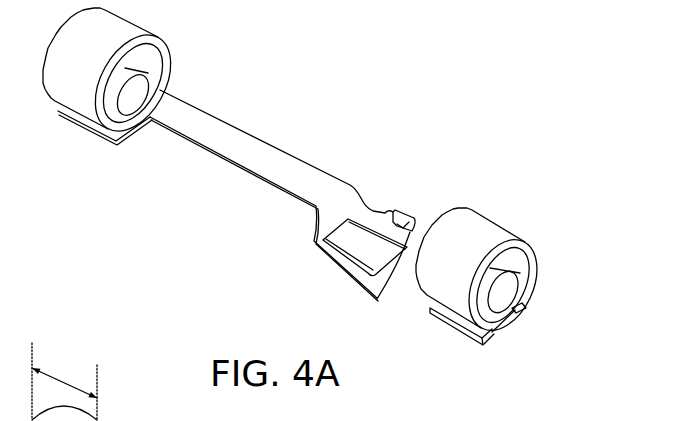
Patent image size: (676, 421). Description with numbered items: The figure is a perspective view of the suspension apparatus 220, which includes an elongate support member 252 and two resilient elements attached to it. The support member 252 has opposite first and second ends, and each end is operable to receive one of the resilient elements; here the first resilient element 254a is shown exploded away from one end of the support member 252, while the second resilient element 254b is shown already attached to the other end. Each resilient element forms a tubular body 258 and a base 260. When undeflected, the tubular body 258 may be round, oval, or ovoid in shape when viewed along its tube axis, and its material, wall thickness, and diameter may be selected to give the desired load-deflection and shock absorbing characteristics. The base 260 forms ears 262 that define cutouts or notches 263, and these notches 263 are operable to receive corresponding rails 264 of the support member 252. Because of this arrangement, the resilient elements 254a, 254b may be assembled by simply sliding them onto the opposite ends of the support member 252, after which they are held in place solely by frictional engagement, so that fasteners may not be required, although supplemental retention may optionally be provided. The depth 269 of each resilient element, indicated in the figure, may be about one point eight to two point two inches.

The suspension apparatus 220 is at (407, 128).
The support member 252 is at (268, 179).
The first resilient element 254a is at (57, 113).
The second resilient element 254b is at (518, 232).
The tubular body 258 is at (478, 225).
The base 260 is at (512, 316).
The ears 262 is at (525, 310).
The notches 263 is at (527, 303).
The rails 264 is at (377, 299).
The depth 269 is at (58, 375).